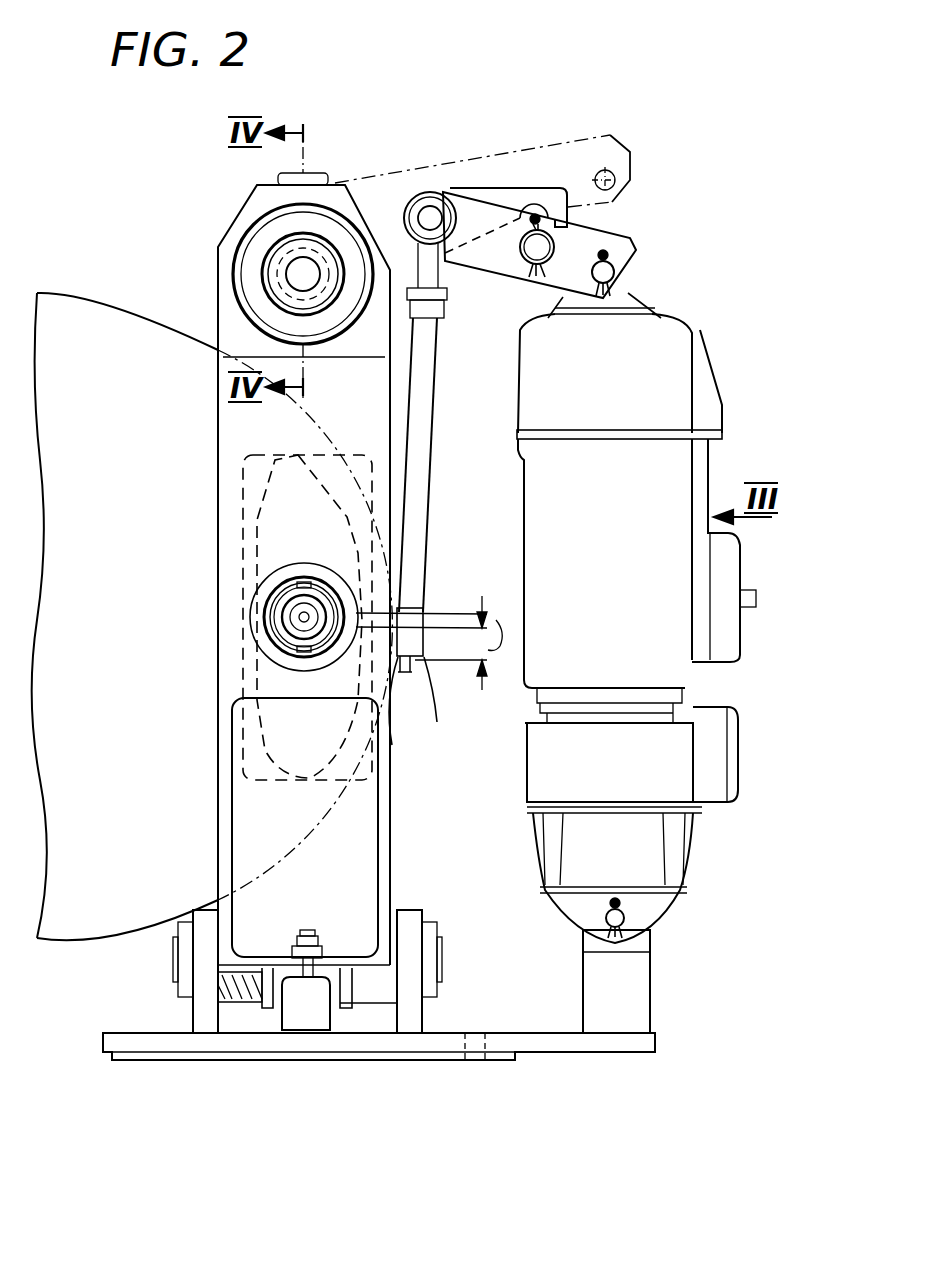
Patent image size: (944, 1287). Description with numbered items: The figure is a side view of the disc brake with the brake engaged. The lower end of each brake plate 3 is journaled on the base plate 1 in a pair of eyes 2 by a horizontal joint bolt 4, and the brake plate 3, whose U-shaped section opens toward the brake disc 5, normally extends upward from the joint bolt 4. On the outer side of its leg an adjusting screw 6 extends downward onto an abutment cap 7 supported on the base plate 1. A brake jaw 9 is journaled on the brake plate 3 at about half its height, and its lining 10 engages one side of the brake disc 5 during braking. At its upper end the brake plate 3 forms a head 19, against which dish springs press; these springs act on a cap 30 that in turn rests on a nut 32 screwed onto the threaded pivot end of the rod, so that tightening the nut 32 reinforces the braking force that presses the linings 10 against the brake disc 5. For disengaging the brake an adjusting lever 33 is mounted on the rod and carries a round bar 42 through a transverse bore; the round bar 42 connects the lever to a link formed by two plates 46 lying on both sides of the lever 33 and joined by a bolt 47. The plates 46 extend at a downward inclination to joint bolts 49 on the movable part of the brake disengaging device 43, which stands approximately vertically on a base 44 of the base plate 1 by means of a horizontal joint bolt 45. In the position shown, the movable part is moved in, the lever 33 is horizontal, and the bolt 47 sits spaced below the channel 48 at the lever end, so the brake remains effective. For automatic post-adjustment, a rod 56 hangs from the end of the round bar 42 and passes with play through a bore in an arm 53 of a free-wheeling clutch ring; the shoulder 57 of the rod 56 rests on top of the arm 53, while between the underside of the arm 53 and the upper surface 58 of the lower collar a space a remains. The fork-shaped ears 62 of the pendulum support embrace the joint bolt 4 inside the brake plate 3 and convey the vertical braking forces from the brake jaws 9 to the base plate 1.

The base plate 1 is at (108, 1043).
The eyes 2 is at (200, 946).
The brake plate 3 is at (232, 420).
The joint bolt 4 is at (428, 946).
The brake disc 5 is at (52, 310).
The adjusting screw 6 is at (308, 930).
The abutment cap 7 is at (301, 1010).
The brake jaw 9 is at (243, 490).
The lining 10 is at (258, 543).
The head 19 is at (248, 218).
The cap 30 is at (258, 260).
The nut 32 is at (283, 281).
The adjusting lever 33 is at (510, 192).
The round bar 42 is at (428, 195).
The brake disengaging device 43 is at (506, 726).
The base 44 is at (638, 988).
The joint bolt 45 is at (622, 920).
The plates 46 is at (630, 152).
The bolt 47 is at (528, 262).
The channel 48 is at (539, 230).
The joint bolts 49 is at (614, 273).
The arm 53 is at (385, 592).
The rod 56 is at (415, 470).
The shoulder 57 is at (420, 612).
The upper surface 58 is at (432, 664).
The ears 62 is at (267, 1005).